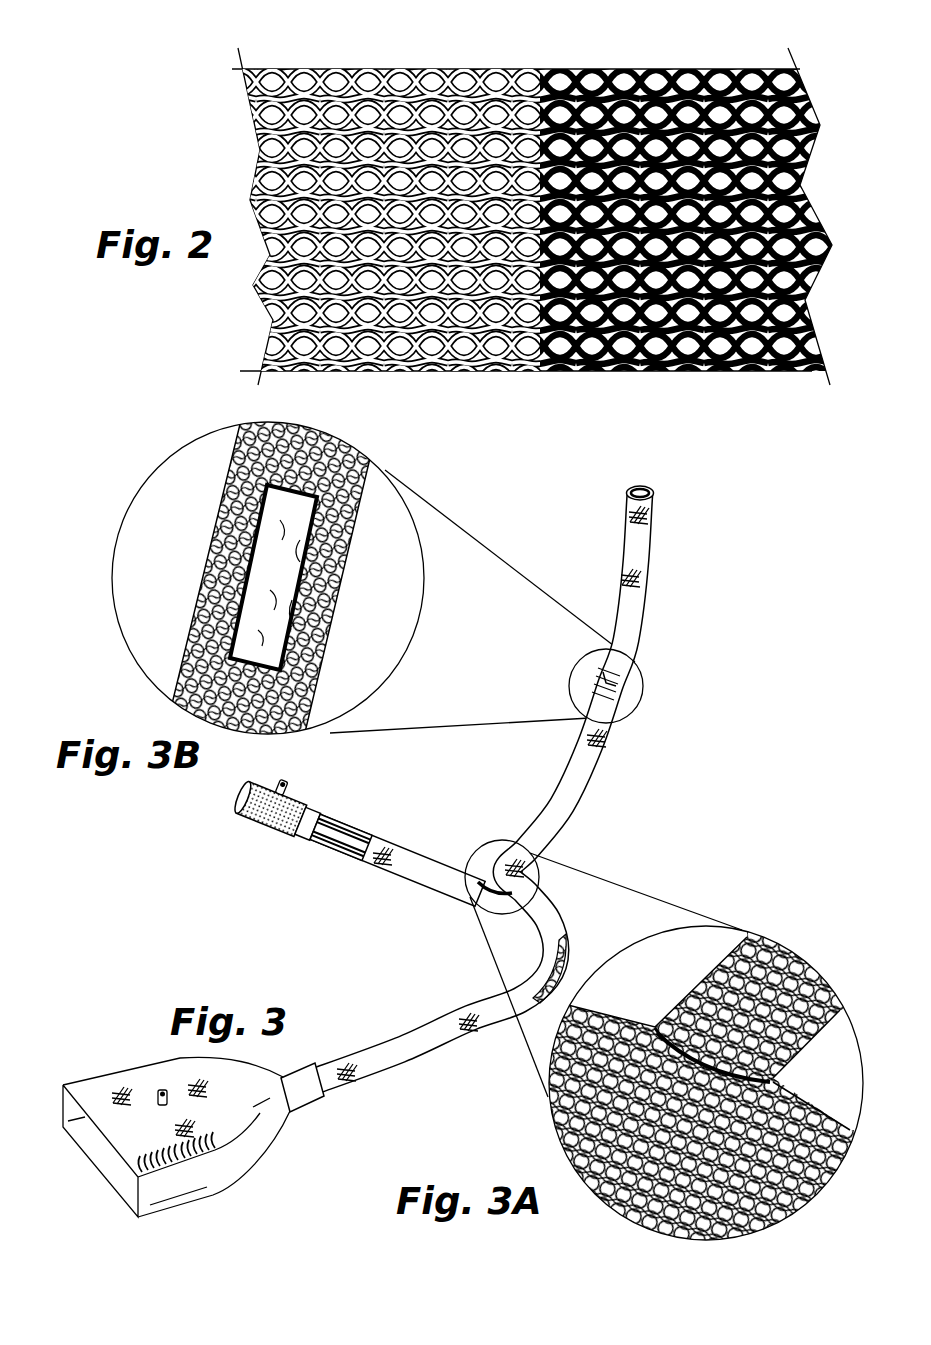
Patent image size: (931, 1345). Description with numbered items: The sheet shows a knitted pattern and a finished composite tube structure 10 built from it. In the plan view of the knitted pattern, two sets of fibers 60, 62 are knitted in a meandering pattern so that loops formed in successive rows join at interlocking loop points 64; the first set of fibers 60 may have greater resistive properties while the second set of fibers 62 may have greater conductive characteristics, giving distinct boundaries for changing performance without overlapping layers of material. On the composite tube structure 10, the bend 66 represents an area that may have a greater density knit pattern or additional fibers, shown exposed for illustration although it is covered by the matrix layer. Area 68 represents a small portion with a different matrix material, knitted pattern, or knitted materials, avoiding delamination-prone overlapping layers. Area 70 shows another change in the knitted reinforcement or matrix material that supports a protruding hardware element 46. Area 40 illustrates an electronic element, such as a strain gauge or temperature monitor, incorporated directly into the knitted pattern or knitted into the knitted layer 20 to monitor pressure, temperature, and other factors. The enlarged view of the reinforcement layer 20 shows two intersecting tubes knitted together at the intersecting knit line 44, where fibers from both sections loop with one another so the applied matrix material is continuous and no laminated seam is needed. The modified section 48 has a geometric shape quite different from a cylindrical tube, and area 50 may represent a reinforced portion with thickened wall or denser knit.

In FIG. 3, the composite tube structure 10 is at (645, 556).
In FIG. 2, the knitted layer 20 is at (527, 382).
In FIG. 3B, the knitted layer 20 is at (178, 583).
In FIG. 3A, the knitted layer 20 is at (786, 962).
In FIG. 3B, the area incorporating electronic element 40 is at (258, 508).
In FIG. 3, the area incorporating electronic element 40 is at (628, 688).
In FIG. 3A, the intersecting knit line 44 is at (657, 1027).
In FIG. 3, the protruding hardware element 46 is at (282, 780).
In FIG. 3, the modified section 48 is at (97, 1088).
In FIG. 3, the reinforced portion 50 is at (300, 1075).
In FIG. 2, the first set of fibers 60 is at (430, 66).
In FIG. 2, the second set of fibers 62 is at (704, 66).
In FIG. 2, the interlocking loop points 64 is at (302, 112).
In FIG. 3, the bend 66 is at (570, 956).
In FIG. 3, the area of modified performance 68 is at (340, 830).
In FIG. 3, the area supporting hardware element 70 is at (276, 822).